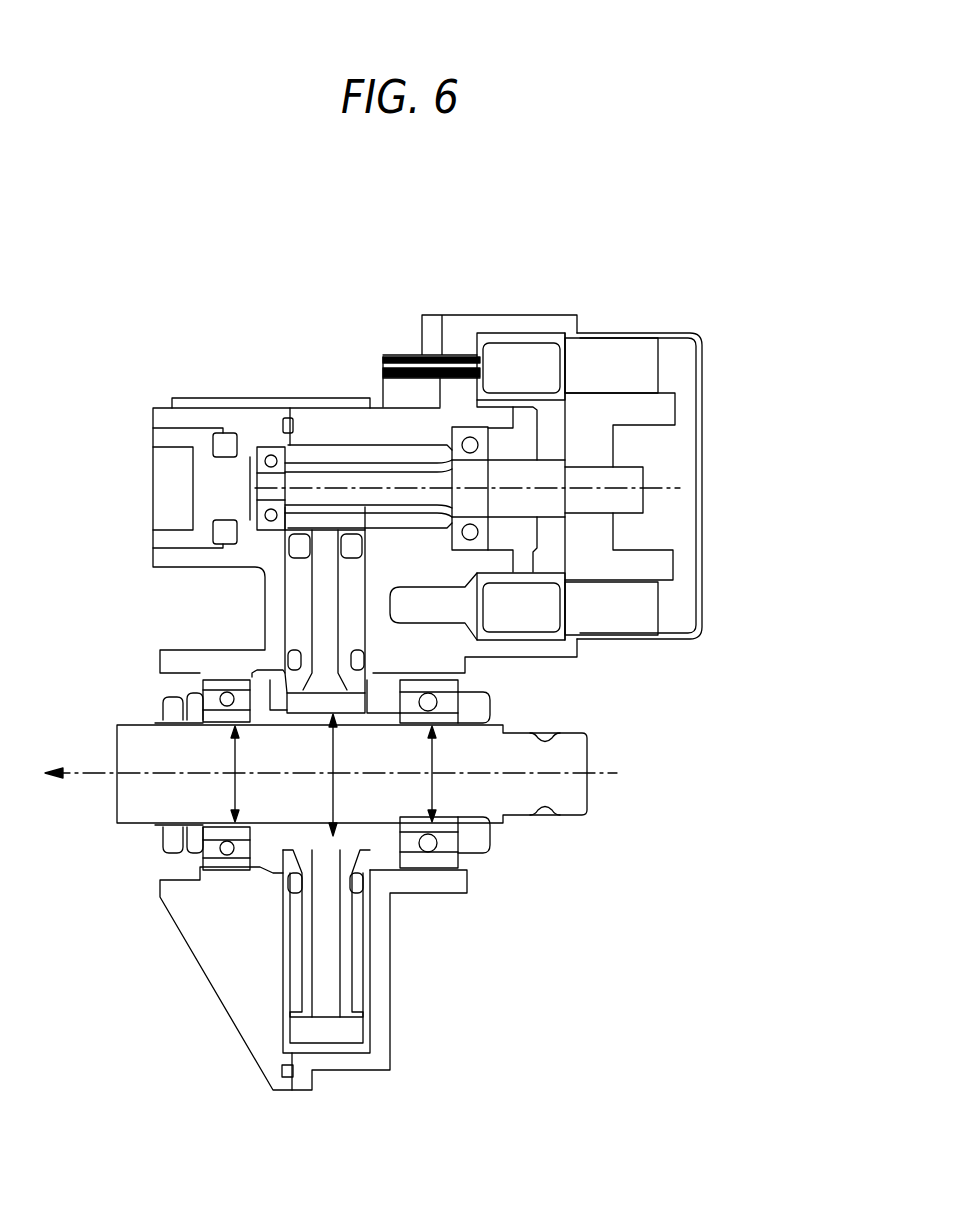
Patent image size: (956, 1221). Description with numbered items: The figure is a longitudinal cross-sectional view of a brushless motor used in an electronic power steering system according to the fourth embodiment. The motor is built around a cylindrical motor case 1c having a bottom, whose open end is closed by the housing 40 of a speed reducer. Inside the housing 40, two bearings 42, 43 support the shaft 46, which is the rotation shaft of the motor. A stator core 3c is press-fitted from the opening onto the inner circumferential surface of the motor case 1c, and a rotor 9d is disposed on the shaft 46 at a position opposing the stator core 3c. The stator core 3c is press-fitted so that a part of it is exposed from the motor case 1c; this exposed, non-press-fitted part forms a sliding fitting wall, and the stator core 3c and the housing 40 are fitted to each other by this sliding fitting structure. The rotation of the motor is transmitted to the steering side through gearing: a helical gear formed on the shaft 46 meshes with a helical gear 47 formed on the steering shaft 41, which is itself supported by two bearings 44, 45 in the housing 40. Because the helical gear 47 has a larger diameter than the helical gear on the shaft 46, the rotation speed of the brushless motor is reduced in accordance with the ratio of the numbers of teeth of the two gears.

The housing 40 is at (493, 322).
The stator core 3c is at (600, 352).
The motor case 1c is at (677, 333).
The rotor 9d is at (662, 563).
The bearing 42 is at (461, 424).
The bearing 43 is at (268, 445).
The shaft 46 is at (334, 478).
The helical gear 47 is at (320, 602).
The steering shaft 41 is at (527, 834).
The bearing 44 is at (437, 862).
The bearing 45 is at (227, 865).